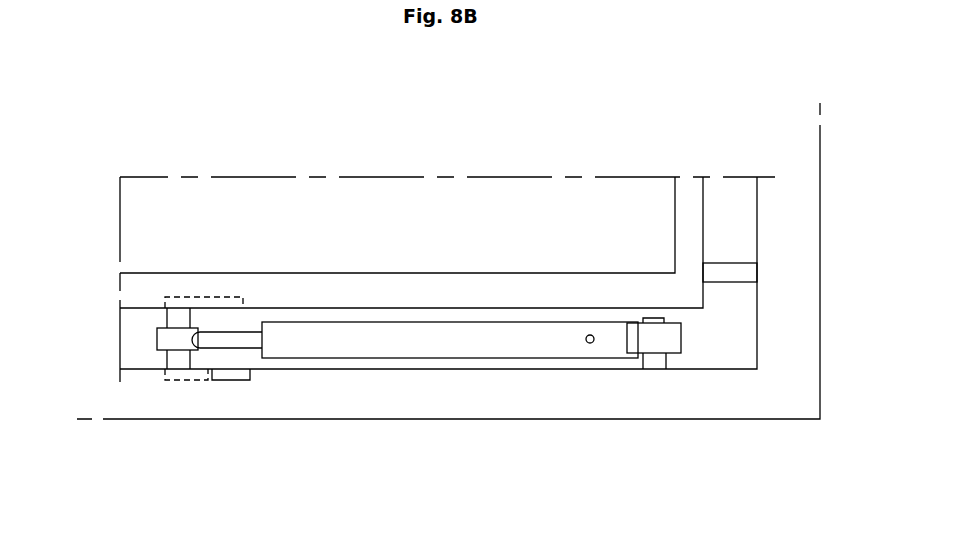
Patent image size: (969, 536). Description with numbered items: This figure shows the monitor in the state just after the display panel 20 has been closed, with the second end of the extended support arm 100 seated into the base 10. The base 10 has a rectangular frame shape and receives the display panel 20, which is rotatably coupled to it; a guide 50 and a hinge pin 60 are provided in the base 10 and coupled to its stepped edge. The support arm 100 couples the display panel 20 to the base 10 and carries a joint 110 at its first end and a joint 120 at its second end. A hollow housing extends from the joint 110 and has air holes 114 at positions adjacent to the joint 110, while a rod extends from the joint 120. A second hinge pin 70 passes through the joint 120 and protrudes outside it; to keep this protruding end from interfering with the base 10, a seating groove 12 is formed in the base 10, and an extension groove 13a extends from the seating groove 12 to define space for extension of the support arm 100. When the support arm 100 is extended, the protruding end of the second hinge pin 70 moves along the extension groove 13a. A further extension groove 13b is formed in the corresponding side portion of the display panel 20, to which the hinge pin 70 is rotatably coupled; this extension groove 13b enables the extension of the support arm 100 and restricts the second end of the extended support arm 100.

The base 10 is at (339, 386).
The seating groove 12 is at (242, 380).
The extension groove 13a is at (187, 383).
The extension groove 13b is at (207, 302).
The display panel 20 is at (582, 198).
The guide 50 is at (738, 268).
The hinge pin 60 is at (657, 363).
The second hinge pin 70 is at (177, 360).
The support arm 100 is at (432, 359).
The joint 110 is at (670, 339).
The air holes 114 is at (590, 343).
The joint 120 is at (165, 340).